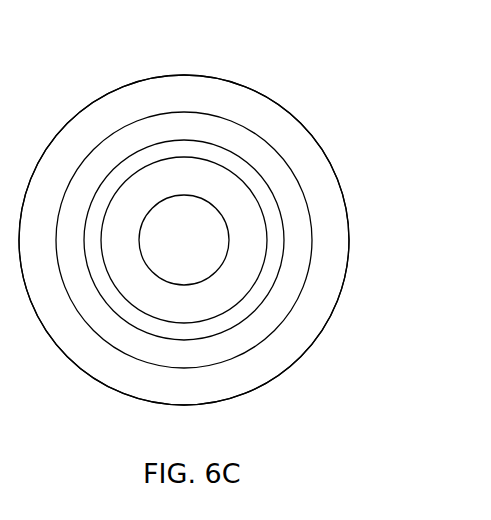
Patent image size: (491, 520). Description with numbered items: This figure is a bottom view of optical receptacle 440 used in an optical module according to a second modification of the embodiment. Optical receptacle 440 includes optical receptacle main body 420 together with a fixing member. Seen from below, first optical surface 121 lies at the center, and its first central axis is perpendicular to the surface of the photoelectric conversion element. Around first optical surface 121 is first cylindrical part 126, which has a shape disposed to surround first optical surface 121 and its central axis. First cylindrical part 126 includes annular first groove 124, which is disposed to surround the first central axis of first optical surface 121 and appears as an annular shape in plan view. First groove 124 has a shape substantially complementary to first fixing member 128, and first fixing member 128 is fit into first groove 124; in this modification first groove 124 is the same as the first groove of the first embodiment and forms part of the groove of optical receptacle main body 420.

The optical receptacle 440 is at (313, 33).
The optical receptacle main body 420 is at (69, 360).
The first cylindrical part 126 is at (91, 228).
The first fixing member 128 is at (153, 135).
The first optical surface 121 is at (179, 232).
The first groove 124 is at (218, 150).